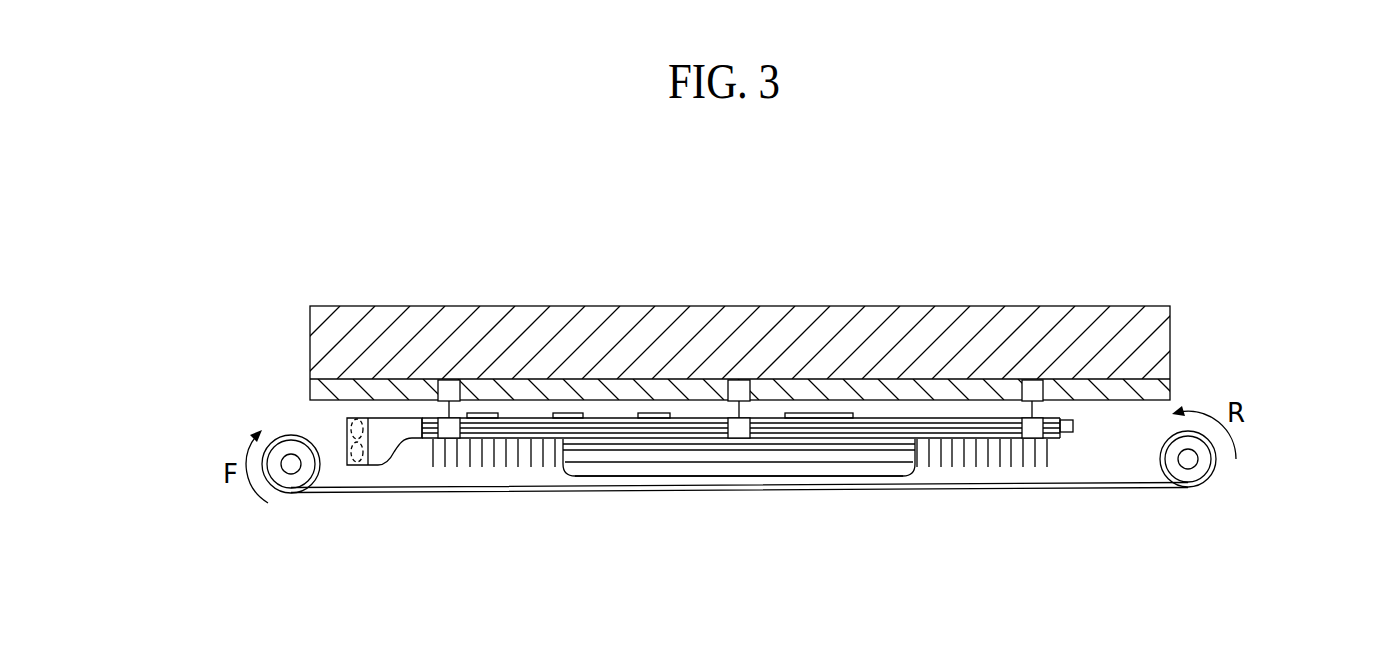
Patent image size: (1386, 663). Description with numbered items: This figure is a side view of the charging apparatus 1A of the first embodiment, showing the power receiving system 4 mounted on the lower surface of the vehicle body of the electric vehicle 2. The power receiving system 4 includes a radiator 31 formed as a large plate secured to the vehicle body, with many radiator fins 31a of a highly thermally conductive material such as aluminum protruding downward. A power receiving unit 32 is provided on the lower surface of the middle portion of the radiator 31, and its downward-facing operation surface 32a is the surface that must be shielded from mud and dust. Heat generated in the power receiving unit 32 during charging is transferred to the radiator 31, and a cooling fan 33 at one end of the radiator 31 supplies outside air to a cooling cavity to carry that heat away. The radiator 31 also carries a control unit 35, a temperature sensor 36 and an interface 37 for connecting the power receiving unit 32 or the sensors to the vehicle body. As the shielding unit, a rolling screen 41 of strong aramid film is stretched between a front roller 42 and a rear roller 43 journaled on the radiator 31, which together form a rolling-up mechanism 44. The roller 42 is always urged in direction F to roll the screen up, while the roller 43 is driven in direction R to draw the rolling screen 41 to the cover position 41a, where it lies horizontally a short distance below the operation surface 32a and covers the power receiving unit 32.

The charging apparatus 1A is at (216, 363).
The electric vehicle 2 is at (310, 326).
The power receiving system 4 is at (1032, 477).
The radiator 31 is at (957, 418).
The radiator fins 31a is at (1048, 450).
The power receiving unit 32 is at (672, 486).
The operation surface 32a is at (812, 480).
The cooling fan 33 is at (345, 432).
The control unit 35 is at (815, 412).
The temperature sensor 36 is at (655, 413).
The interface 37 is at (452, 390).
The rolling screen 41 is at (739, 536).
The cover position 41a is at (480, 492).
The roller 42 is at (291, 470).
The roller 43 is at (1195, 465).
The rolling-up mechanism 44 is at (1264, 462).